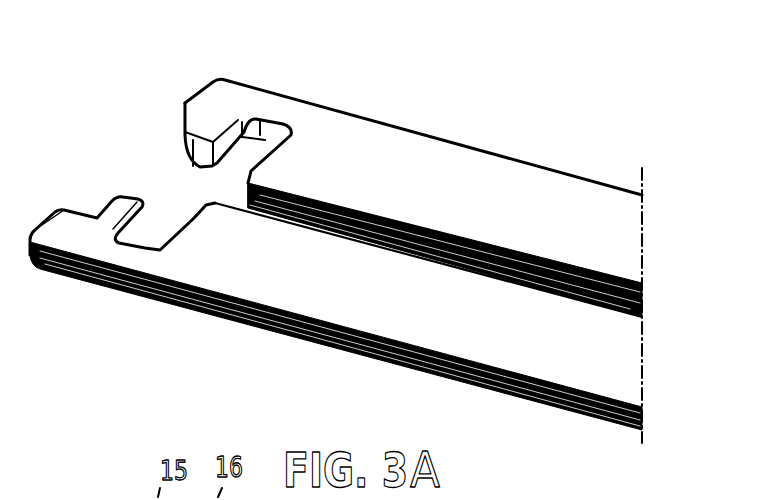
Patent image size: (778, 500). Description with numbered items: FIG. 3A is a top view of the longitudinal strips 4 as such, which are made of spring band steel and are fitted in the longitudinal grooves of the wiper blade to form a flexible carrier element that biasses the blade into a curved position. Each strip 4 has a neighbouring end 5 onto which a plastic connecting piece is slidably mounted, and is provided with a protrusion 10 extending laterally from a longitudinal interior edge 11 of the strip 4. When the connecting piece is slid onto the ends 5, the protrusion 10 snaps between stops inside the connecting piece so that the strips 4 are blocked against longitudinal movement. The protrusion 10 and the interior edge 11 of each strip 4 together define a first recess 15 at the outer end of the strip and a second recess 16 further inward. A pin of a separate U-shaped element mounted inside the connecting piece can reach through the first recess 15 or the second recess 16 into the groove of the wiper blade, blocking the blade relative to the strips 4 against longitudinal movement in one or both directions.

The longitudinal strip 4 is at (622, 233).
The neighbouring end 5 is at (170, 97).
The protrusion 10 is at (190, 160).
The longitudinal interior edge 11 is at (372, 213).
The first recess 15 is at (196, 121).
The second recess 16 is at (242, 150).